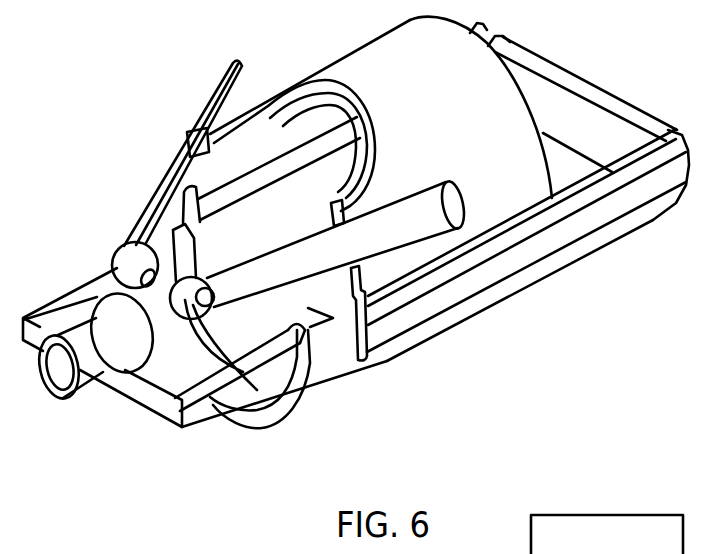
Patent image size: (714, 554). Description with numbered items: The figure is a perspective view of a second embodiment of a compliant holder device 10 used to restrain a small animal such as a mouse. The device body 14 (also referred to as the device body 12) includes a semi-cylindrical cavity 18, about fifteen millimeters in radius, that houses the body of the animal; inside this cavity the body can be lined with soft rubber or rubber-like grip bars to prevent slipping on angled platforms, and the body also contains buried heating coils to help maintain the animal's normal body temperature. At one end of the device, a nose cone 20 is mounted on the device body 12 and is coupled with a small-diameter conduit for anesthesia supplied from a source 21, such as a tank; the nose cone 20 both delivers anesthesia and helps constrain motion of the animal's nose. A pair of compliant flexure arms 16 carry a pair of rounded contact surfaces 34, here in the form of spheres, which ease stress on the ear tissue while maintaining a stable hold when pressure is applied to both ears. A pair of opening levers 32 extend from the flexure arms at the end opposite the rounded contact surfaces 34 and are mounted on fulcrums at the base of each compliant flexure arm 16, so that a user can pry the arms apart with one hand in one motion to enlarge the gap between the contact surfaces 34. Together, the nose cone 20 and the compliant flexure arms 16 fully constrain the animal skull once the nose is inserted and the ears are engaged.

The compliant holder device 10 is at (146, 80).
The device body 12 is at (364, 76).
The device body 14 is at (388, 362).
The compliant flexure arms 16 is at (145, 195).
The semi-cylindrical cavity 18 is at (308, 328).
The nose cone 20 is at (92, 367).
The opening levers 32 is at (220, 88).
The rounded contact surfaces 34 is at (127, 262).
The source 21 is at (613, 553).